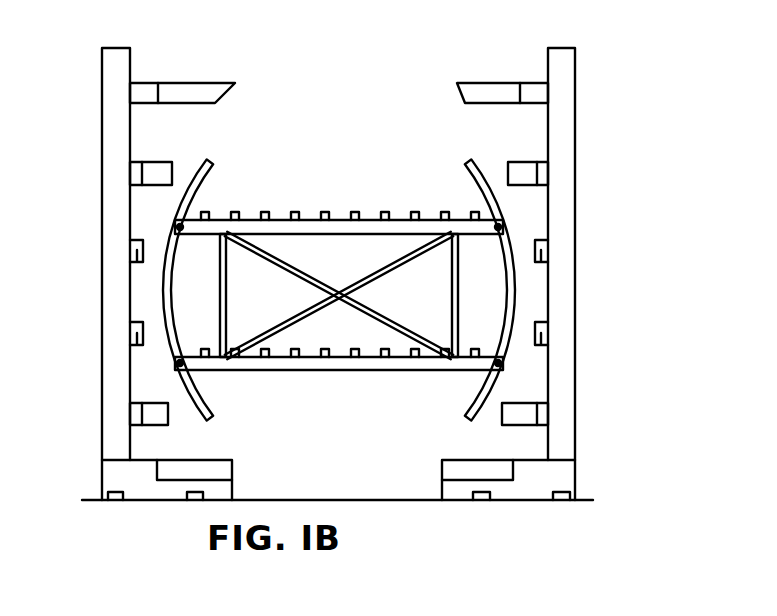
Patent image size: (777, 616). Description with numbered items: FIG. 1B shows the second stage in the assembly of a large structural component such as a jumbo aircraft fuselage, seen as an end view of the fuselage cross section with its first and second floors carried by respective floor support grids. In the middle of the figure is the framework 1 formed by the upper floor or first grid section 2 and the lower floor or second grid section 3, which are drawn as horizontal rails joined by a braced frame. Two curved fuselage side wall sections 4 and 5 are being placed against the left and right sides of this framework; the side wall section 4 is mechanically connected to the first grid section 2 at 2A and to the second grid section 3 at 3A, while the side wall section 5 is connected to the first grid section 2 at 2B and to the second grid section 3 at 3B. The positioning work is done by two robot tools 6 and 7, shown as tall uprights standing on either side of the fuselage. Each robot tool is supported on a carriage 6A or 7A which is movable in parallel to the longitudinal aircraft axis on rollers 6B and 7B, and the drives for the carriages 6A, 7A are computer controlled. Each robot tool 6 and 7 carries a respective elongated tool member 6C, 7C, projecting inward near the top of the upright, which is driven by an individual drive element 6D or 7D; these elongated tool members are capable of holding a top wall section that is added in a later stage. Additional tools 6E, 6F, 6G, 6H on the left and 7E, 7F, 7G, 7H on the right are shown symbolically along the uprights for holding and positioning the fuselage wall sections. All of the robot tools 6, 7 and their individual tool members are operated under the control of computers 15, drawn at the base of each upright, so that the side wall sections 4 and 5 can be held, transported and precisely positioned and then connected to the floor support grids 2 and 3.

The truss frame 1 is at (458, 316).
The first grid section 2 is at (312, 220).
The connection point on first grid section 2A is at (180, 234).
The connection point on first grid section 2B is at (500, 240).
The second grid section 3 is at (347, 366).
The connection point on second grid section 3A is at (183, 367).
The connection point on second grid section 3B is at (480, 370).
The side wall section 4 is at (216, 142).
The side wall section 5 is at (465, 140).
The robot tool 6 is at (114, 62).
The carriage 6A is at (122, 472).
The rollers 6B is at (117, 502).
The elongated tool member 6C is at (190, 103).
The drive element 6D is at (143, 103).
The additional tool 6E is at (155, 178).
The additional tool 6F is at (138, 262).
The additional tool 6G is at (138, 345).
The additional tool 6H is at (150, 412).
The robot tool 7 is at (560, 64).
The carriage 7A is at (534, 478).
The rollers 7B is at (483, 502).
The elongated tool member 7C is at (493, 100).
The drive element 7D is at (533, 101).
The additional tool 7E is at (527, 185).
The additional tool 7F is at (540, 262).
The additional tool 7G is at (540, 345).
The additional tool 7H is at (525, 412).
The computer 15 is at (217, 470).